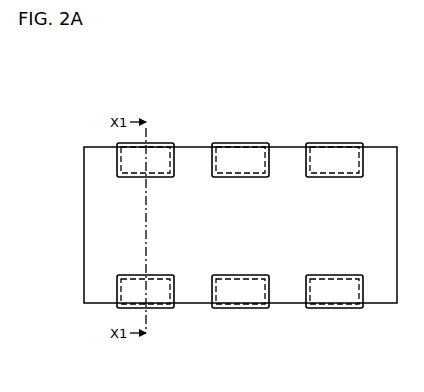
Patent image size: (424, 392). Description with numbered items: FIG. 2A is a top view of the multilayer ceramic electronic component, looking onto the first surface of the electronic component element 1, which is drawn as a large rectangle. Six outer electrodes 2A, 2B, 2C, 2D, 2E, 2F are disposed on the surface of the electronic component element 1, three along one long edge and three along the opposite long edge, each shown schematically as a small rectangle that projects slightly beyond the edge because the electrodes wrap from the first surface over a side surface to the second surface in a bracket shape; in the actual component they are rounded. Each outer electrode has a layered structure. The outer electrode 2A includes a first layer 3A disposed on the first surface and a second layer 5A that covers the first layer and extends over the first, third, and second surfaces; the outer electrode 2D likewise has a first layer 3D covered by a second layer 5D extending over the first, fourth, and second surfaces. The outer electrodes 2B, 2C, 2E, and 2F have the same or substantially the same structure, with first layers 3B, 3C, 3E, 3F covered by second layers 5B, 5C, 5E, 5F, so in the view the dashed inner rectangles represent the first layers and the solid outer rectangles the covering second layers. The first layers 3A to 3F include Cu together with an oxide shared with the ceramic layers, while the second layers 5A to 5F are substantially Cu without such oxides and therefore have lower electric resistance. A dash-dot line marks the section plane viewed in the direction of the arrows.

The electronic component element 1 is at (373, 262).
The outer electrode 2A is at (129, 123).
The outer electrode 2B is at (233, 123).
The outer electrode 2C is at (325, 123).
The outer electrode 2D is at (129, 330).
The outer electrode 2E is at (233, 330).
The outer electrode 2F is at (325, 330).
The first layer 3A is at (146, 135).
The first layer 3B is at (244, 158).
The first layer 3C is at (339, 158).
The first layer 3D is at (146, 318).
The first layer 3E is at (244, 296).
The first layer 3F is at (340, 296).
The second layer 5A is at (116, 148).
The second layer 5B is at (216, 148).
The second layer 5C is at (311, 148).
The second layer 5D is at (114, 303).
The second layer 5E is at (216, 305).
The second layer 5F is at (310, 305).